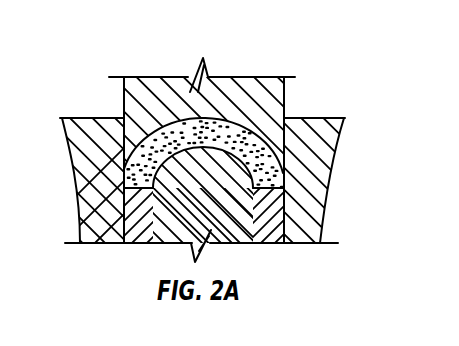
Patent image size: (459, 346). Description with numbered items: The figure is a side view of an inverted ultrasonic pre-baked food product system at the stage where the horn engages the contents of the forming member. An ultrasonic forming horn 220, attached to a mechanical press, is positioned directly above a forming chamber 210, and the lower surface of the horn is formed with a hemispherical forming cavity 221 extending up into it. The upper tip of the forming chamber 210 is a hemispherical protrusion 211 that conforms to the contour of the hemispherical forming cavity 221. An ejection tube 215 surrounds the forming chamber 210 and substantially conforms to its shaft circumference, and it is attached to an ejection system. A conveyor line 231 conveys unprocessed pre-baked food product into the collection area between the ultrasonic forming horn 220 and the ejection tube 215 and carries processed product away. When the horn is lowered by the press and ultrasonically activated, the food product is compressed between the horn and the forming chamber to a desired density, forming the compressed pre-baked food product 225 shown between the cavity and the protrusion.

The forming chamber 210 is at (247, 244).
The hemispherical protrusion 211 is at (190, 92).
The ejection tube 215 is at (82, 243).
The ultrasonic forming horn 220 is at (285, 99).
The hemispherical forming cavity 221 is at (148, 121).
The compressed pre-baked food product 225 is at (125, 189).
The conveyor line 231 is at (320, 118).